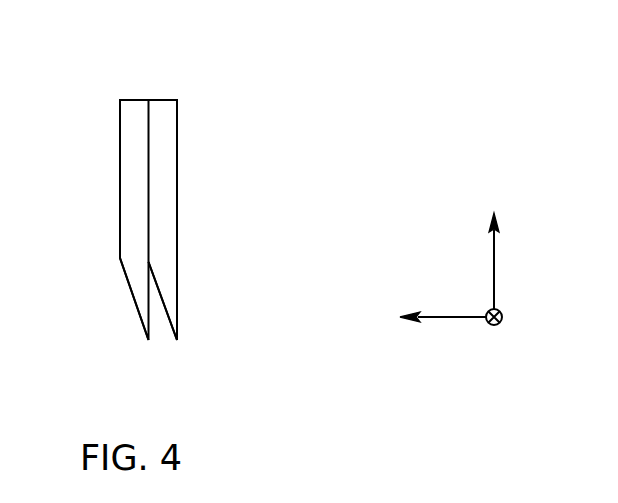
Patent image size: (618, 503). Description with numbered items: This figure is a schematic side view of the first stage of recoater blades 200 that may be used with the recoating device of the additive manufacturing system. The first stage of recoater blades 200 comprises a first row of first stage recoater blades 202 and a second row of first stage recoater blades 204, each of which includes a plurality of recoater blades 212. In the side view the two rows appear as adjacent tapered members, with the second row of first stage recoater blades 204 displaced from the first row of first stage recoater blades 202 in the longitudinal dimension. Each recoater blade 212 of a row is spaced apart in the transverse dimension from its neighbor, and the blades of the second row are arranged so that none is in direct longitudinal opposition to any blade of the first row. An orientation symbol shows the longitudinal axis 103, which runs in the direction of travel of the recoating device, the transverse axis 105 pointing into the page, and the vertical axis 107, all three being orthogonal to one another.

The first stage of recoater blades 200 is at (149, 70).
The first row of first stage recoater blades 202 is at (127, 195).
The second row of first stage recoater blades 204 is at (178, 218).
The recoater blade 212 is at (160, 307).
The longitudinal axis 103 is at (443, 320).
The transverse axis 105 is at (505, 322).
The vertical axis 107 is at (496, 265).